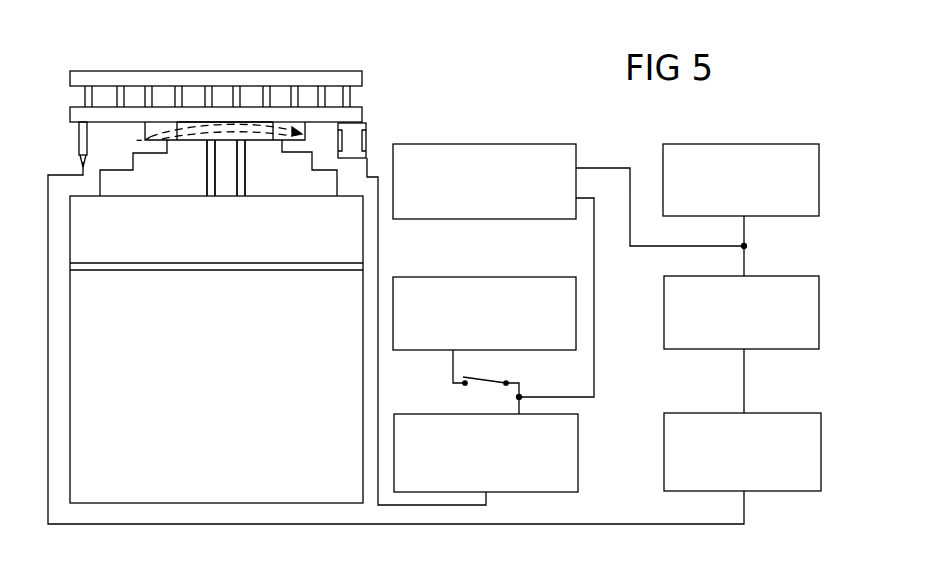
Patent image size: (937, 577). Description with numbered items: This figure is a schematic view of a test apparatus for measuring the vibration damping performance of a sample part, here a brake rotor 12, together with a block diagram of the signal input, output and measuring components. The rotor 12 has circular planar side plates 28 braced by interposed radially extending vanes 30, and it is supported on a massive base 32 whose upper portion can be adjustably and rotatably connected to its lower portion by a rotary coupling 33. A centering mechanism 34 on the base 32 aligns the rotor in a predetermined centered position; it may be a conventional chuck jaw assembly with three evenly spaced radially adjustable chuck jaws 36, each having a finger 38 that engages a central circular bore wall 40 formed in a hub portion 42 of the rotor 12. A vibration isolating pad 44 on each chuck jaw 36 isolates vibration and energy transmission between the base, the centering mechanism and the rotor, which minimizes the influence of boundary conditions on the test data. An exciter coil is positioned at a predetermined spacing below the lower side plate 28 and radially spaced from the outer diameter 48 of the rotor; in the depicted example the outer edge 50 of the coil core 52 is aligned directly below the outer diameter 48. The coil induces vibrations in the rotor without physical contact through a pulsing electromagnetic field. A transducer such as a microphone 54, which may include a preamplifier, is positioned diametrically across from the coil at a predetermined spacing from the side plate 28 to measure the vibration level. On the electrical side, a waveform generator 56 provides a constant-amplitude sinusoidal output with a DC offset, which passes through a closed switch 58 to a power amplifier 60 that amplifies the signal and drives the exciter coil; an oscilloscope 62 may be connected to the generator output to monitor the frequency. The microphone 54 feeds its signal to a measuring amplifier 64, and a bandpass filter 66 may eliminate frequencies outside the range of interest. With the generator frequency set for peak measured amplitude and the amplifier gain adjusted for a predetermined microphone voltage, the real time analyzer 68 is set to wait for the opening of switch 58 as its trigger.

The brake rotor 12 is at (138, 56).
The side plates 28 is at (311, 113).
The vanes 30 is at (88, 101).
The base 32 is at (128, 283).
The rotary coupling 33 is at (225, 272).
The centering mechanism 34 is at (140, 147).
The chuck jaws 36 is at (113, 182).
The finger 38 is at (236, 139).
The central circular bore wall 40 is at (148, 134).
The hub portion 42 is at (224, 121).
The vibration isolating pad 44 is at (193, 147).
The outer diameter 48 is at (363, 103).
The outer edge 50 is at (367, 121).
The coil core 52 is at (347, 152).
The microphone 54 is at (79, 140).
The waveform generator 56 is at (484, 277).
The switch 58 is at (492, 376).
The power amplifier 60 is at (578, 462).
The oscilloscope 62 is at (508, 144).
The measuring amplifier 64 is at (776, 276).
The bandpass filter 66 is at (780, 413).
The real time analyzer 68 is at (744, 144).